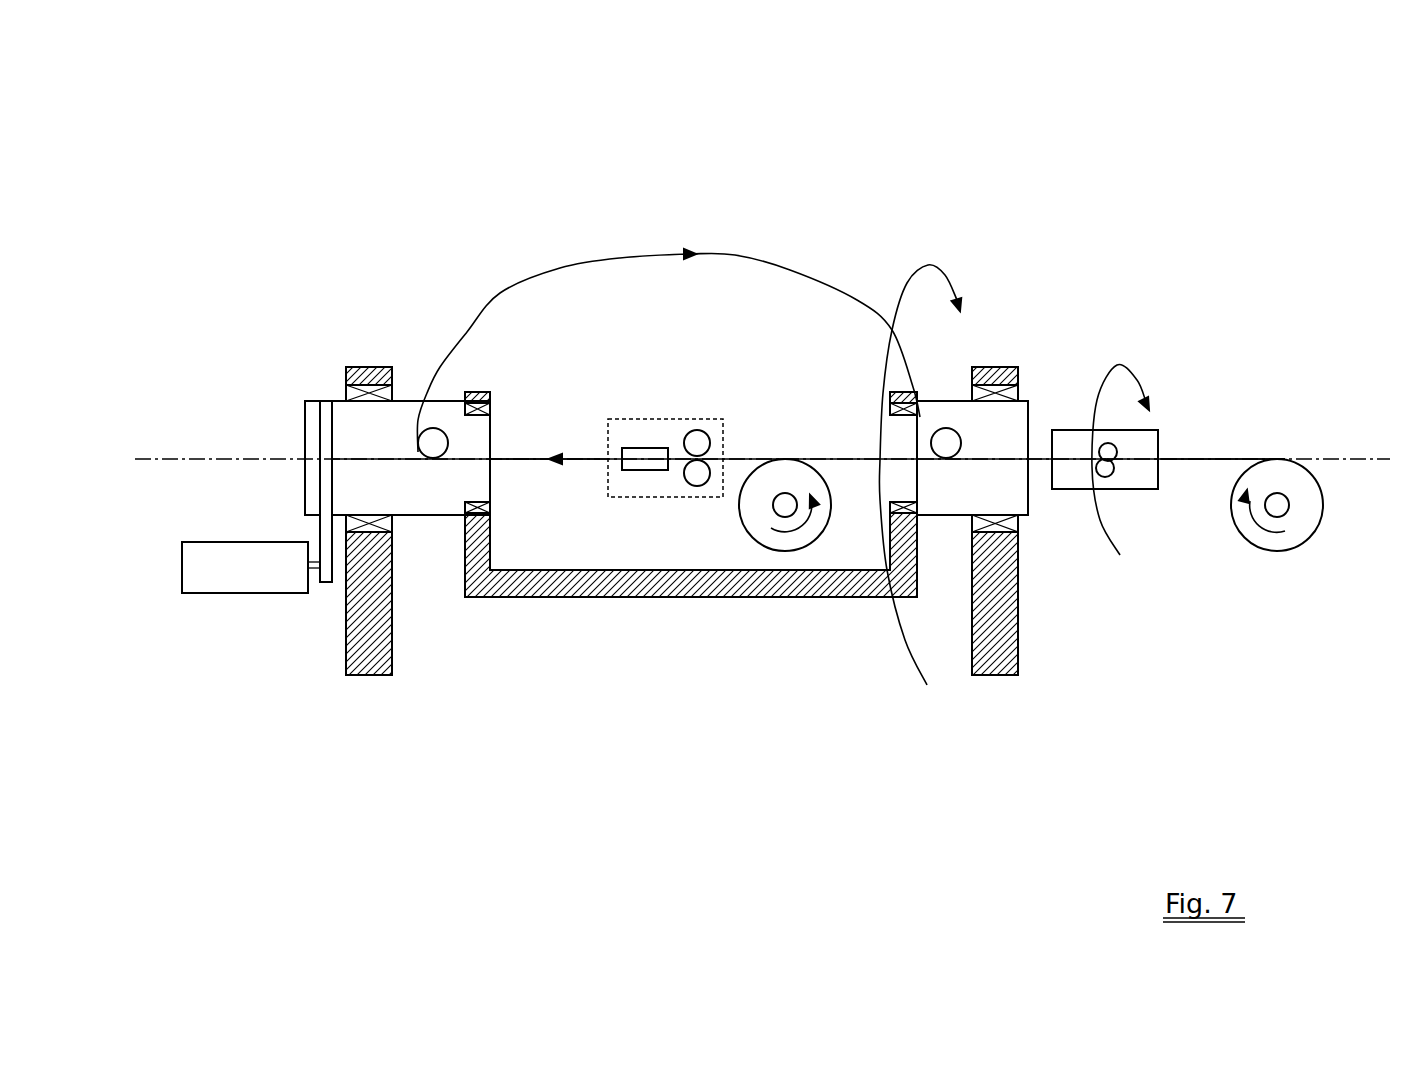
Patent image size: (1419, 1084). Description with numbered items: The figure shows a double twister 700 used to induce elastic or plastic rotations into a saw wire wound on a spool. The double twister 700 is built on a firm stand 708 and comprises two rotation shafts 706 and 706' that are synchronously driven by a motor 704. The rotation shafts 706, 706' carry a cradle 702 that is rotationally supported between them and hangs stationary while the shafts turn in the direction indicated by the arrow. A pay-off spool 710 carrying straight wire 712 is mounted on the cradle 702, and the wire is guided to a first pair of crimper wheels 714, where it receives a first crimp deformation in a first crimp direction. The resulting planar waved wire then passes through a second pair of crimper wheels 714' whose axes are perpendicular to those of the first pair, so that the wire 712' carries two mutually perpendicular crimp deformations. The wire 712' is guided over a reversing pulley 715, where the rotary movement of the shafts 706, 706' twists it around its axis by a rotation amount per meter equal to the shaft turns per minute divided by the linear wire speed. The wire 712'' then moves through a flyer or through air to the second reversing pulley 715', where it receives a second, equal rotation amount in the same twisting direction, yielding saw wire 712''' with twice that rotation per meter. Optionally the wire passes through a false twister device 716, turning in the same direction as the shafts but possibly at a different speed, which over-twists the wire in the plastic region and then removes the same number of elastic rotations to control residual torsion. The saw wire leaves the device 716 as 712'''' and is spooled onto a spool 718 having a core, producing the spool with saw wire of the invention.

The double twister 700 is at (300, 196).
The cradle 702 is at (603, 583).
The motor 704 is at (252, 580).
The rotation shaft 706 is at (351, 452).
The rotation shaft 706' is at (1034, 521).
The firm stand 708 is at (365, 648).
The pay-off spool 710 is at (782, 543).
The straight wire 712 is at (808, 430).
The wire 712' is at (564, 501).
The wire 712'' is at (668, 311).
The saw wire 712''' is at (1090, 440).
The saw wire 712'''' is at (1267, 430).
The first pair of crimper wheels 714 is at (726, 414).
The second pair of crimper wheels 714' is at (586, 410).
The reversing pulley 715 is at (361, 365).
The second reversing pulley 715' is at (992, 475).
The false twister device 716 is at (1150, 450).
The spool 718 is at (1285, 543).